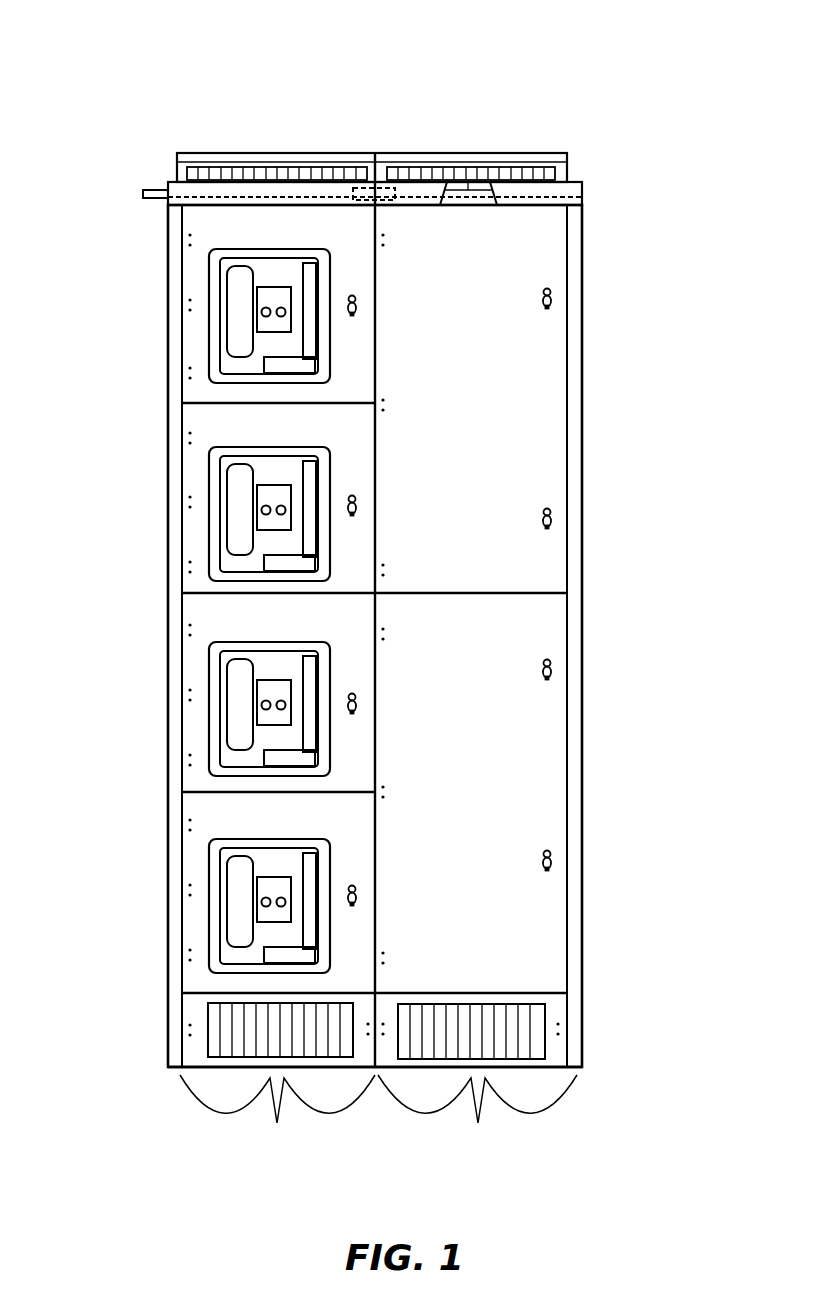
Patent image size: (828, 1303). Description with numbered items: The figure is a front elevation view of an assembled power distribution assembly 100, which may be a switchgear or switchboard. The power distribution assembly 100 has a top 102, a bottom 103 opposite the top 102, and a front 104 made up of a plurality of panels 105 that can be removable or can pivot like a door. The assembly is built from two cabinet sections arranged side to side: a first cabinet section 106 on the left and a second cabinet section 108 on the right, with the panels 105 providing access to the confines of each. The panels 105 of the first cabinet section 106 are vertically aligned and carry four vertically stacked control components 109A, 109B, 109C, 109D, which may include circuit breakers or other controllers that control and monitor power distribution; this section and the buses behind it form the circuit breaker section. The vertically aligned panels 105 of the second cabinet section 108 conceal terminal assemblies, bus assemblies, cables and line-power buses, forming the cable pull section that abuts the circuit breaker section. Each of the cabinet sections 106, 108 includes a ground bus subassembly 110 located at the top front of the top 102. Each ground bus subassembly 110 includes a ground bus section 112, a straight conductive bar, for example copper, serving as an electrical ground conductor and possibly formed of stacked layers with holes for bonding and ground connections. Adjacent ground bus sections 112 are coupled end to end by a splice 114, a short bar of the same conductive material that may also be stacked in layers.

The power distribution assembly 100 is at (465, 58).
The top 102 is at (373, 105).
The bottom 103 is at (548, 1133).
The front 104 is at (522, 459).
The panels 105 is at (208, 226).
The first cabinet section 106 is at (277, 1082).
The second cabinet section 108 is at (477, 1082).
The control component 109A is at (207, 327).
The control component 109B is at (207, 525).
The control component 109C is at (207, 720).
The control component 109D is at (207, 918).
The ground bus subassembly 110 is at (252, 182).
The ground bus section 112 is at (327, 195).
The splice 114 is at (155, 191).